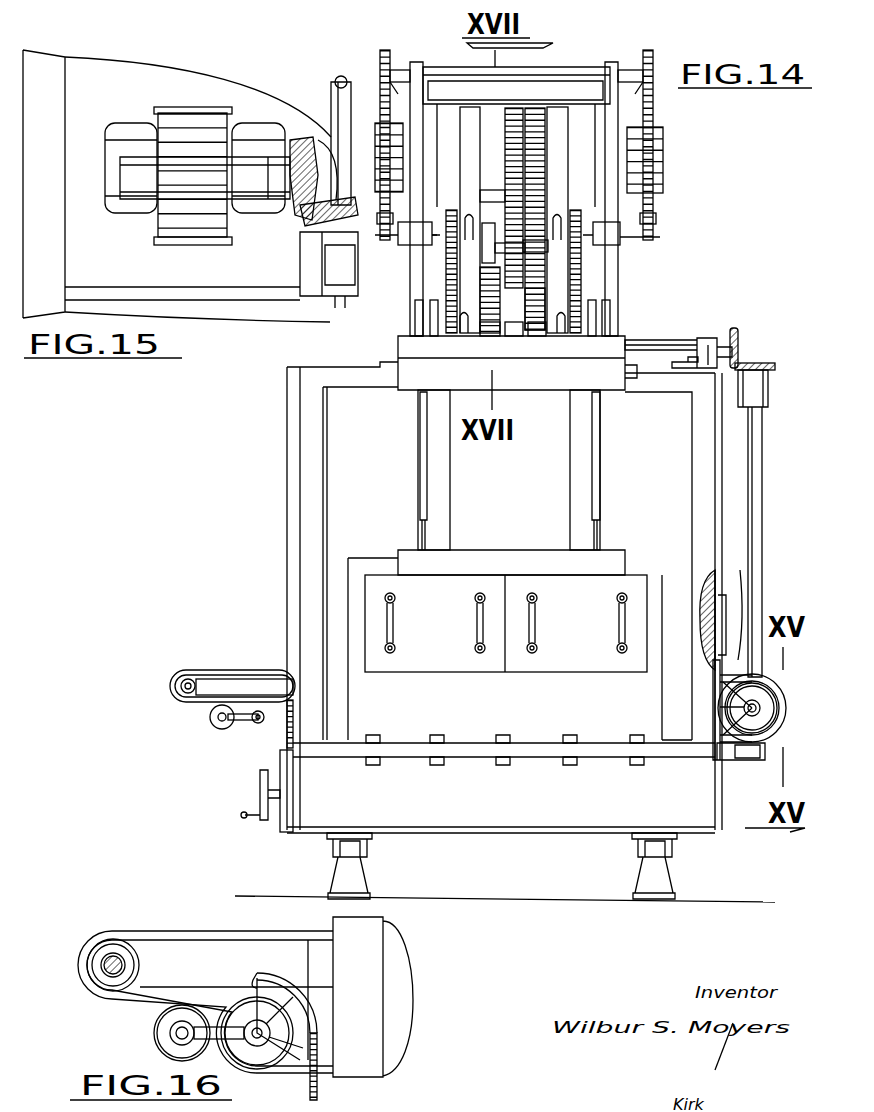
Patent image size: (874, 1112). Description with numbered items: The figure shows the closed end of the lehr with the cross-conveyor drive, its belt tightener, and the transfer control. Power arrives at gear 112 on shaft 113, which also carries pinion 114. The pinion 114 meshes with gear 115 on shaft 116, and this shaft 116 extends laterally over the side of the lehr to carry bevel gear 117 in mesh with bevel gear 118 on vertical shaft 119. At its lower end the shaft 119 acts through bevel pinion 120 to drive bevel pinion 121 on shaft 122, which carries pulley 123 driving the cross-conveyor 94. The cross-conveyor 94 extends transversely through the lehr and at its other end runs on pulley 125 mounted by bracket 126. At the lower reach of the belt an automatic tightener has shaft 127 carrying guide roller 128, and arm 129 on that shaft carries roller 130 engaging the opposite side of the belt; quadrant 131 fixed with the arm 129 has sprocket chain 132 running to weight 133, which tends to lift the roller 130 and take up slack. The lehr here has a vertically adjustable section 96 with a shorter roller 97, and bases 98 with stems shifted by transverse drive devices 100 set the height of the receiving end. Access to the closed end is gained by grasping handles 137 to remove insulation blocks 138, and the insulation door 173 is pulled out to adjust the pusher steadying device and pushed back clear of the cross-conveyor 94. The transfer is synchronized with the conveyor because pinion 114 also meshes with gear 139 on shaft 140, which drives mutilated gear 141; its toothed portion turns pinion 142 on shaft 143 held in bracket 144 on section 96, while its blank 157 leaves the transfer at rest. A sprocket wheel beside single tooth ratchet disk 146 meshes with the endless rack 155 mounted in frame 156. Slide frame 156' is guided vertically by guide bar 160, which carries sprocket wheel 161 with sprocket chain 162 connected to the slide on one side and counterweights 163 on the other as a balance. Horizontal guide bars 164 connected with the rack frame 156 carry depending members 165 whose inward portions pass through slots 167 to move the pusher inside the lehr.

In FIG. 15, the cross-conveyor 94 is at (195, 112).
In FIG. 14, the cross-conveyor 94 is at (207, 666).
In FIG. 16, the cross-conveyor 94 is at (182, 930).
In FIG. 14, the vertically adjustable lehr section 96 is at (287, 409).
In FIG. 16, the vertically adjustable lehr section 96 is at (395, 982).
In FIG. 14, the roller 97 is at (333, 852).
In FIG. 14, the bases 98 is at (368, 872).
In FIG. 14, the drive devices 100 is at (260, 784).
In FIG. 14, the gear 112 is at (488, 336).
In FIG. 14, the shaft 113 is at (514, 336).
In FIG. 14, the pinion 114 is at (545, 300).
In FIG. 14, the gear 115 is at (540, 336).
In FIG. 14, the shaft 116 is at (680, 345).
In FIG. 14, the bevel gear 117 is at (740, 334).
In FIG. 14, the bevel gear 118 is at (750, 362).
In FIG. 15, the vertical shaft 119 is at (331, 95).
In FIG. 14, the vertical shaft 119 is at (762, 463).
In FIG. 15, the bevel pinion 120 is at (290, 240).
In FIG. 15, the bevel pinion 121 is at (305, 235).
In FIG. 15, the shaft 122 is at (292, 140).
In FIG. 14, the shaft 122 is at (762, 736).
In FIG. 15, the pulley 123 is at (158, 234).
In FIG. 14, the pulley 123 is at (762, 706).
In FIG. 14, the pulley 125 is at (190, 700).
In FIG. 16, the pulley 125 is at (139, 966).
In FIG. 14, the bracket 126 is at (218, 682).
In FIG. 16, the bracket 126 is at (148, 995).
In FIG. 14, the shaft 127 is at (272, 709).
In FIG. 16, the shaft 127 is at (274, 1019).
In FIG. 16, the guide roller 128 is at (278, 1065).
In FIG. 14, the arm 129 is at (238, 722).
In FIG. 16, the arm 129 is at (222, 1027).
In FIG. 14, the roller 130 is at (222, 727).
In FIG. 16, the roller 130 is at (160, 1036).
In FIG. 16, the quadrant 131 is at (254, 990).
In FIG. 14, the sprocket chain 132 is at (293, 740).
In FIG. 16, the sprocket chain 132 is at (318, 1090).
In FIG. 14, the weight 133 is at (293, 808).
In FIG. 14, the handles 137 is at (478, 653).
In FIG. 14, the insulation blocks 138 is at (530, 653).
In FIG. 14, the gear 139 is at (548, 196).
In FIG. 14, the shaft 140 is at (485, 197).
In FIG. 14, the mutilated companion gear 141 is at (500, 150).
In FIG. 14, the pinion 142 is at (479, 299).
In FIG. 14, the shaft 143 is at (540, 246).
In FIG. 14, the bracket 144 is at (557, 156).
In FIG. 14, the single tooth ratchet disk 146 is at (493, 235).
In FIG. 14, the endless rack 155 is at (448, 283).
In FIG. 14, the rack frame 156 is at (526, 278).
In FIG. 14, the shiftable frame 156' is at (548, 296).
In FIG. 14, the blank 157 is at (515, 112).
In FIG. 14, the guide bar 160 is at (412, 213).
In FIG. 14, the sprocket wheel 161 is at (390, 58).
In FIG. 14, the sprocket chain 162 is at (387, 106).
In FIG. 14, the counterweights 163 is at (395, 145).
In FIG. 14, the guide bars 164 is at (423, 340).
In FIG. 14, the depending members 165 is at (430, 538).
In FIG. 14, the slots 167 is at (418, 415).
In FIG. 14, the door 173 is at (720, 600).